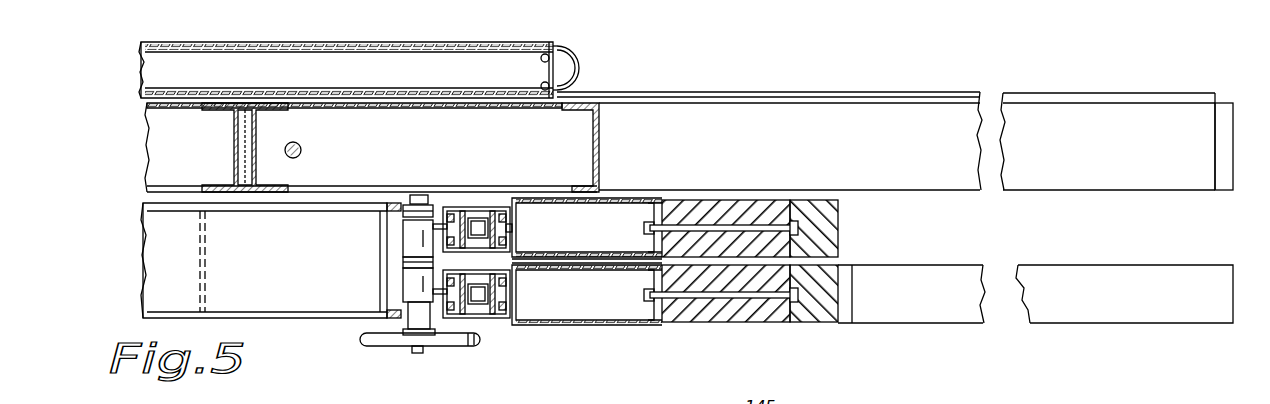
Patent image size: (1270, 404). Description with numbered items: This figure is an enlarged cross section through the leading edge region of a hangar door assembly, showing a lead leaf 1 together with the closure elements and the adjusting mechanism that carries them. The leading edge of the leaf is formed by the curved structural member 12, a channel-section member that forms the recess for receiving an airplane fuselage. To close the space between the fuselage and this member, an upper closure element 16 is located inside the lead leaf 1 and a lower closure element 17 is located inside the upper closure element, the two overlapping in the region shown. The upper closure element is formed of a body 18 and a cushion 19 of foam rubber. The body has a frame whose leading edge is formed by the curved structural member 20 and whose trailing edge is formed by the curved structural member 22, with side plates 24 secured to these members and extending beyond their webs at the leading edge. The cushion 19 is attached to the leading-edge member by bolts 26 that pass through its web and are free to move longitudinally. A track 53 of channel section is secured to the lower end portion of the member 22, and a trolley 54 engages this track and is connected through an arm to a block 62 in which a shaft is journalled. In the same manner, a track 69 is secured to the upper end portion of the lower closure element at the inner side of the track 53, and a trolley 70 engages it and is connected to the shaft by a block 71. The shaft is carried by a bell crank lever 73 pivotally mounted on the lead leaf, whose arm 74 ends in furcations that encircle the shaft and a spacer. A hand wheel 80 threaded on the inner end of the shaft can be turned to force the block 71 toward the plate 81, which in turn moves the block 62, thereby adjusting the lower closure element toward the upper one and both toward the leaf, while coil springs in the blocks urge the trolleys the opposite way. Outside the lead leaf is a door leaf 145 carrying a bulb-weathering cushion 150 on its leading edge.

The lead leaf 1 is at (238, 132).
The curved structural member 12 is at (600, 152).
The upper closure element 16 is at (845, 232).
The lower closure element 17 is at (875, 325).
The body 18 is at (618, 197).
The cushion 19 is at (838, 205).
The curved structural member 20 is at (650, 249).
The curved structural member 22 is at (522, 204).
The side plate 24 is at (630, 201).
The bolt 26 is at (772, 212).
The track 53 is at (474, 200).
The trolley 54 is at (510, 228).
The block 62 is at (403, 232).
The track 69 is at (487, 320).
The trolley 70 is at (510, 296).
The block 71 is at (403, 278).
The lever 73 is at (287, 316).
The arm 74 is at (310, 297).
The hand wheel 80 is at (455, 342).
The plate 81 is at (440, 254).
The door leaf 145 is at (488, 55).
The cushion 150 is at (580, 62).